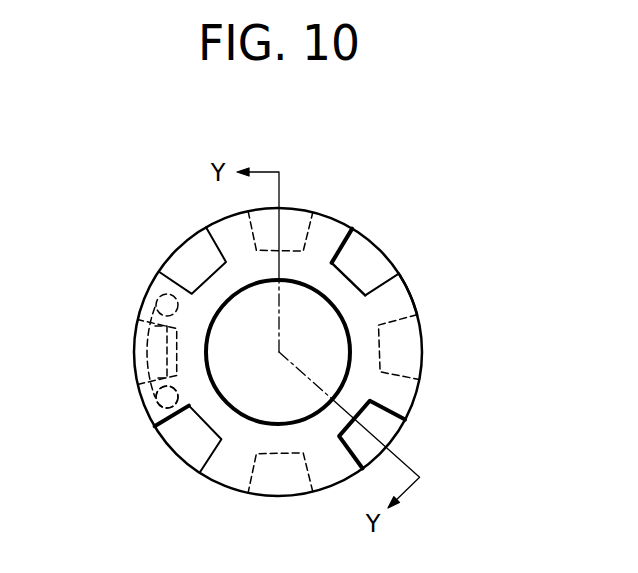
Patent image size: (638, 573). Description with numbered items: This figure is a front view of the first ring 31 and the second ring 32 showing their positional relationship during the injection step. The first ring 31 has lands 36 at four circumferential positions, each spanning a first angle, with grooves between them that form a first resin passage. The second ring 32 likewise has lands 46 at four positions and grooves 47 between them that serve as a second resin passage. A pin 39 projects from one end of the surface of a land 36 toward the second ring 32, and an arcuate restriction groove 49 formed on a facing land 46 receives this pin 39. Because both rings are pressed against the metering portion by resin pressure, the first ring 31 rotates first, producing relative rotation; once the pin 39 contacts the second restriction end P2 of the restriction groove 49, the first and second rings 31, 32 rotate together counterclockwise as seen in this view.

The first ring 31 is at (346, 318).
The second ring 32 is at (424, 395).
The land 36 is at (357, 250).
The pin 39 is at (155, 402).
The land 46 is at (397, 300).
The groove 47 is at (384, 276).
The arcuate restriction groove 49 is at (155, 301).
The second restriction end P2 is at (153, 384).